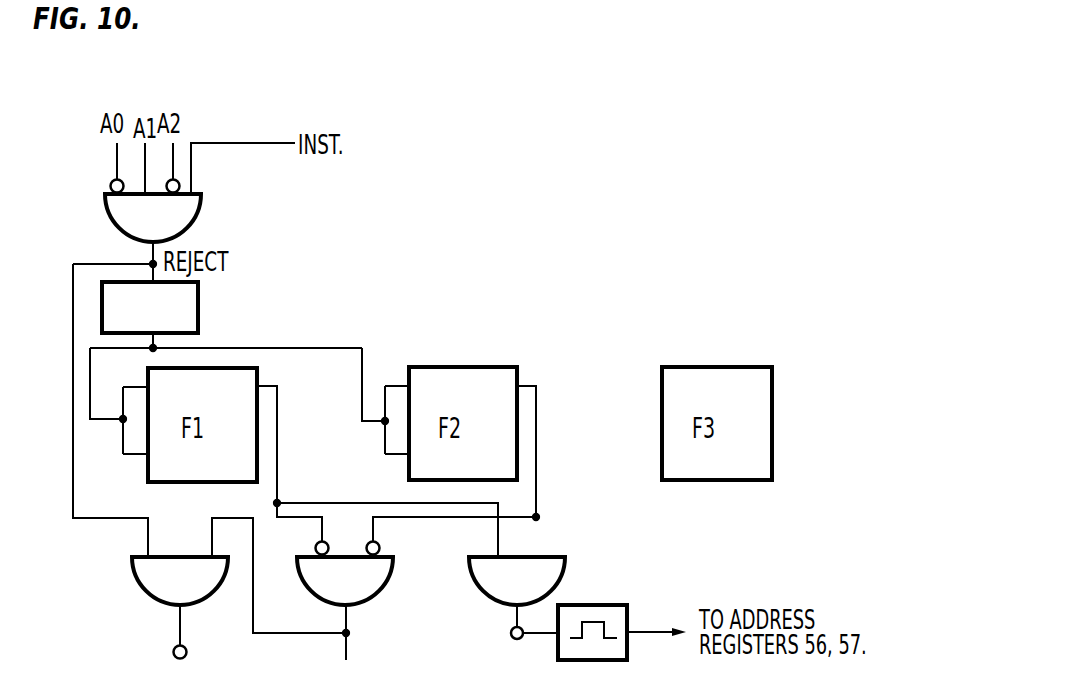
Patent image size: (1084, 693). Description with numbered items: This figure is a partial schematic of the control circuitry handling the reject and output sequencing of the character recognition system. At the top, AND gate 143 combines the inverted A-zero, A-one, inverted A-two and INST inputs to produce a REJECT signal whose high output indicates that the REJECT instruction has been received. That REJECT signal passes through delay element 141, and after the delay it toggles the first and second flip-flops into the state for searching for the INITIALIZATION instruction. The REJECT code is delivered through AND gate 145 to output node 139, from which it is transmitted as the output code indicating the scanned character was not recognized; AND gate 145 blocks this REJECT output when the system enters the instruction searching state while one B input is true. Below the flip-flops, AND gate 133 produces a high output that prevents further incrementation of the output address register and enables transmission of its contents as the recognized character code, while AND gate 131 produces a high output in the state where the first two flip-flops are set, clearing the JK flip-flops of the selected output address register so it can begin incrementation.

The AND gate 143 is at (168, 225).
The delay element 141 is at (199, 299).
The AND gate 145 is at (195, 588).
The output node 139 is at (172, 652).
The AND gate 133 is at (360, 588).
The AND gate 131 is at (532, 588).